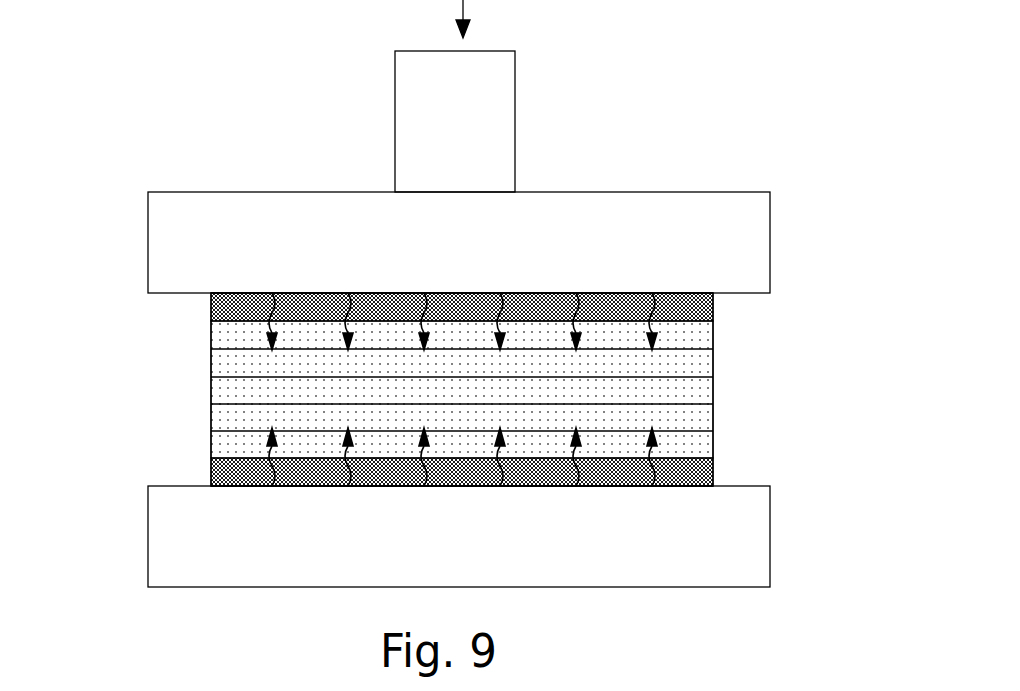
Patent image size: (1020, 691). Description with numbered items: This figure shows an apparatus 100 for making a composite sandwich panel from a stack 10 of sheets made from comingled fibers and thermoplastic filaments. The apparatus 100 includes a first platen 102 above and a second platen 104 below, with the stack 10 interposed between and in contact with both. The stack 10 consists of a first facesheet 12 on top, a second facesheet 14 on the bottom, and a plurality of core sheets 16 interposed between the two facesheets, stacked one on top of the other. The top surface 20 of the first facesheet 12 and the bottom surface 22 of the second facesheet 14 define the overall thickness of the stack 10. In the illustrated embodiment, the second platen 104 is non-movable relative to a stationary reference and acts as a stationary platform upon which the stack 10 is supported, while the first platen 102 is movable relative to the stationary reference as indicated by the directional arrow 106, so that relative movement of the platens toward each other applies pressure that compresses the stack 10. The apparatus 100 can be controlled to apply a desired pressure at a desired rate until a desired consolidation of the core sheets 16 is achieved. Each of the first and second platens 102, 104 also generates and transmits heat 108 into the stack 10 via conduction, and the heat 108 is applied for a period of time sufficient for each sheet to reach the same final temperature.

The stack 10 is at (76, 361).
The first facesheet 12 is at (198, 307).
The second facesheet 14 is at (198, 472).
The core sheets 16 is at (198, 338).
The top surface 20 is at (612, 292).
The bottom surface 22 is at (540, 487).
The apparatus 100 is at (690, 35).
The first platen 102 is at (177, 228).
The second platen 104 is at (168, 552).
The directional arrow 106 is at (463, 12).
The heat 108 is at (698, 310).